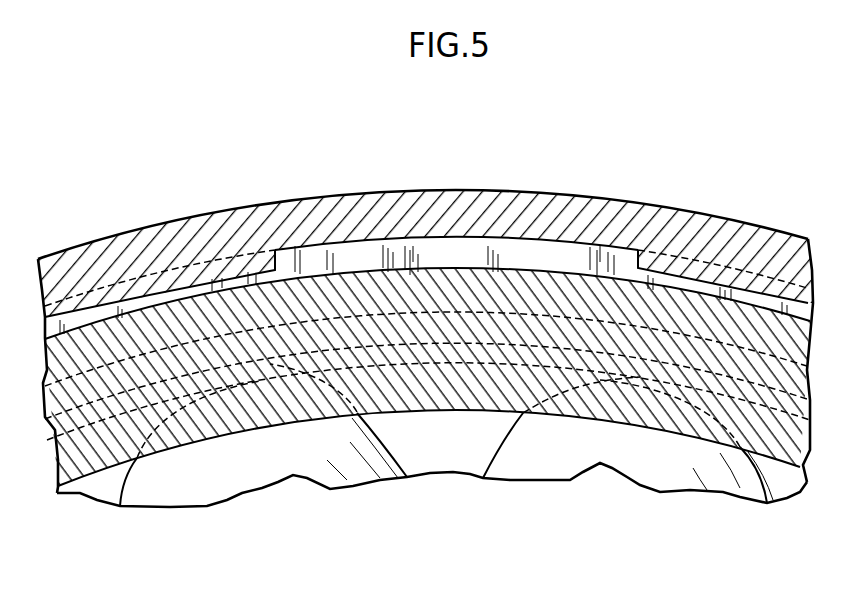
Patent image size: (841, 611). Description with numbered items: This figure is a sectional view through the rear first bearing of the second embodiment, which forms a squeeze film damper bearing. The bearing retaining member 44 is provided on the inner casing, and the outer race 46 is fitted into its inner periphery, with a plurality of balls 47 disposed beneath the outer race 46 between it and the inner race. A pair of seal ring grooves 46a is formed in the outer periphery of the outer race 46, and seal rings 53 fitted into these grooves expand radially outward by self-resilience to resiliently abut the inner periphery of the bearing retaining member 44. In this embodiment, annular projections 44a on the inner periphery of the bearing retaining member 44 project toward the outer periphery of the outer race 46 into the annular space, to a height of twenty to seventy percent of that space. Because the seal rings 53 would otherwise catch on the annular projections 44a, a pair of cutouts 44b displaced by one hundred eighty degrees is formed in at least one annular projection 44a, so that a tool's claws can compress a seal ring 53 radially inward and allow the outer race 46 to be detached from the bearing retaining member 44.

The bearing retaining member 44 is at (226, 200).
The annular projections 44a is at (166, 292).
The cutouts 44b is at (442, 236).
The outer race 46 is at (541, 260).
The seal ring grooves 46a is at (370, 333).
The balls 47 is at (307, 462).
The seal rings 53 is at (356, 252).